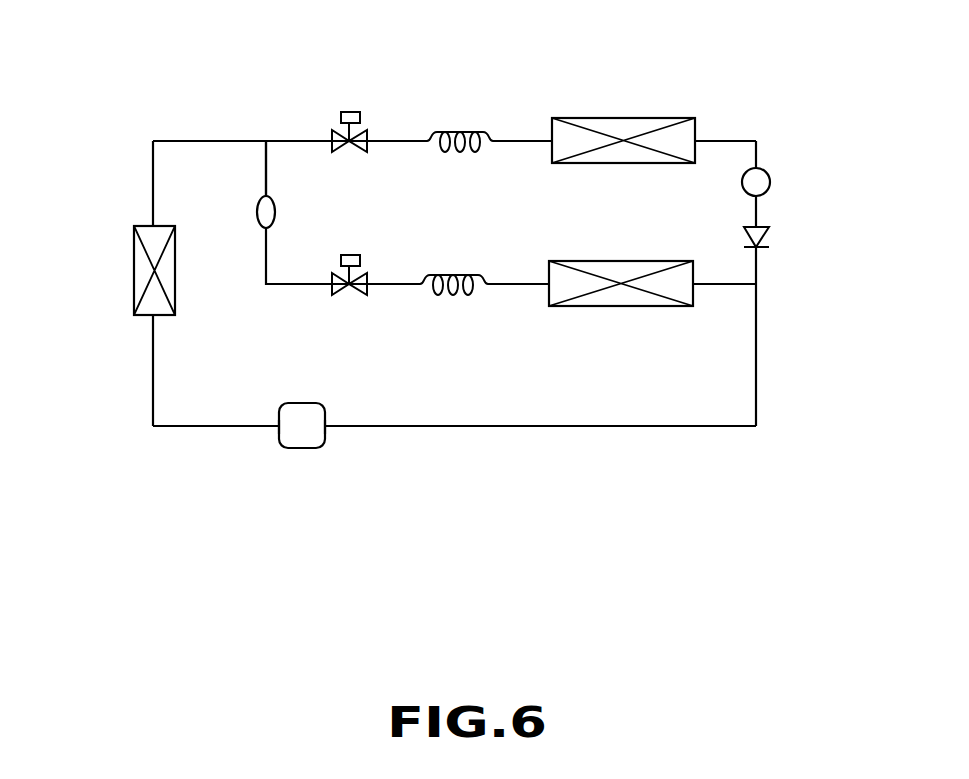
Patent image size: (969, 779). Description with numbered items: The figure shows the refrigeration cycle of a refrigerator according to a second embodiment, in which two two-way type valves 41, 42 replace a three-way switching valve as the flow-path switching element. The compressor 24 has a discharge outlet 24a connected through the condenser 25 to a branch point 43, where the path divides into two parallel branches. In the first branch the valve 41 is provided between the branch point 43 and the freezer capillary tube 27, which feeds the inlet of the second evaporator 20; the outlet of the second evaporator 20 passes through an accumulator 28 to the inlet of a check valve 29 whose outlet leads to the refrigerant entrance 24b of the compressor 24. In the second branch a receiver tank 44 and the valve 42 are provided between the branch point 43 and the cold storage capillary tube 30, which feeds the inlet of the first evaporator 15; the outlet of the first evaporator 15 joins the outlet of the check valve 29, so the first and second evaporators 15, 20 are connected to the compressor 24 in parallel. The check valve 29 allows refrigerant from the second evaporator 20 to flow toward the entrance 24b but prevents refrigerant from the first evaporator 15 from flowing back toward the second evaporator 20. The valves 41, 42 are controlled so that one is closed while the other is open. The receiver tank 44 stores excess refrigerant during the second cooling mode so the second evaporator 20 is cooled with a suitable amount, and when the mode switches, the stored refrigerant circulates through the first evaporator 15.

The first evaporator 15 is at (622, 307).
The second evaporator 20 is at (630, 118).
The compressor 24 is at (302, 448).
The discharge outlet 24a is at (277, 427).
The refrigerant entrance 24b is at (325, 427).
The condenser 25 is at (134, 272).
The freezer capillary tube 27 is at (468, 117).
The accumulator 28 is at (770, 182).
The check valve 29 is at (772, 238).
The cold storage capillary tube 30 is at (458, 298).
The two-way type valve 41 is at (349, 158).
The two-way type valve 42 is at (349, 296).
The branch point 43 is at (274, 121).
The receiver tank 44 is at (257, 225).